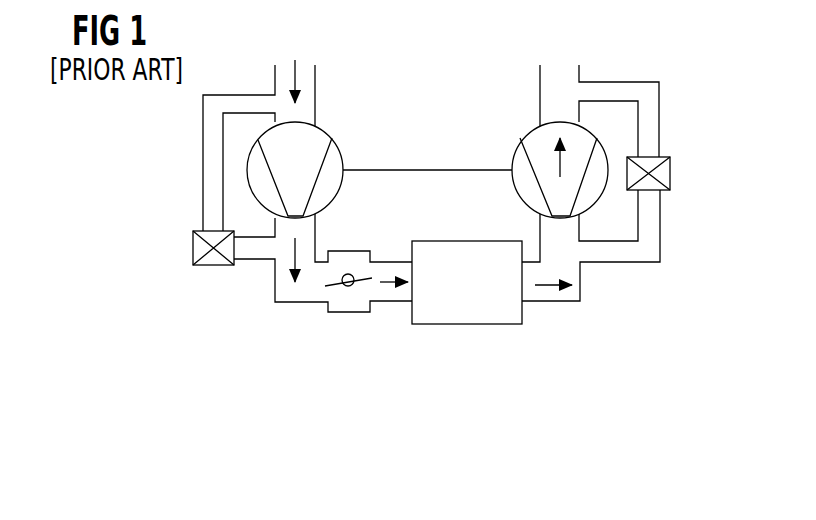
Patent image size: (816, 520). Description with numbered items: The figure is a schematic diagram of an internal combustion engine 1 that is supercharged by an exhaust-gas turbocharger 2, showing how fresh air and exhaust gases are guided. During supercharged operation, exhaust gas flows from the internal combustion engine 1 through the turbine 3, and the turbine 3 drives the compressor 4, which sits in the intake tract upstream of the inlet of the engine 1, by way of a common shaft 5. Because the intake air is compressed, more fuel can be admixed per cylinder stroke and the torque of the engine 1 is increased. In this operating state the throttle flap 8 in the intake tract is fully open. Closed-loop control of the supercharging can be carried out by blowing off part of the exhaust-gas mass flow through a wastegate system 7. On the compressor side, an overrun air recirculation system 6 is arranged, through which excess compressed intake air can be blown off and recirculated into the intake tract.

The internal combustion engine 1 is at (468, 313).
The exhaust-gas turbocharger 2 is at (428, 131).
The turbine 3 is at (525, 148).
The compressor 4 is at (330, 140).
The common shaft 5 is at (390, 175).
The overrun air recirculation system 6 is at (193, 247).
The wastegate system 7 is at (670, 173).
The throttle flap 8 is at (348, 287).